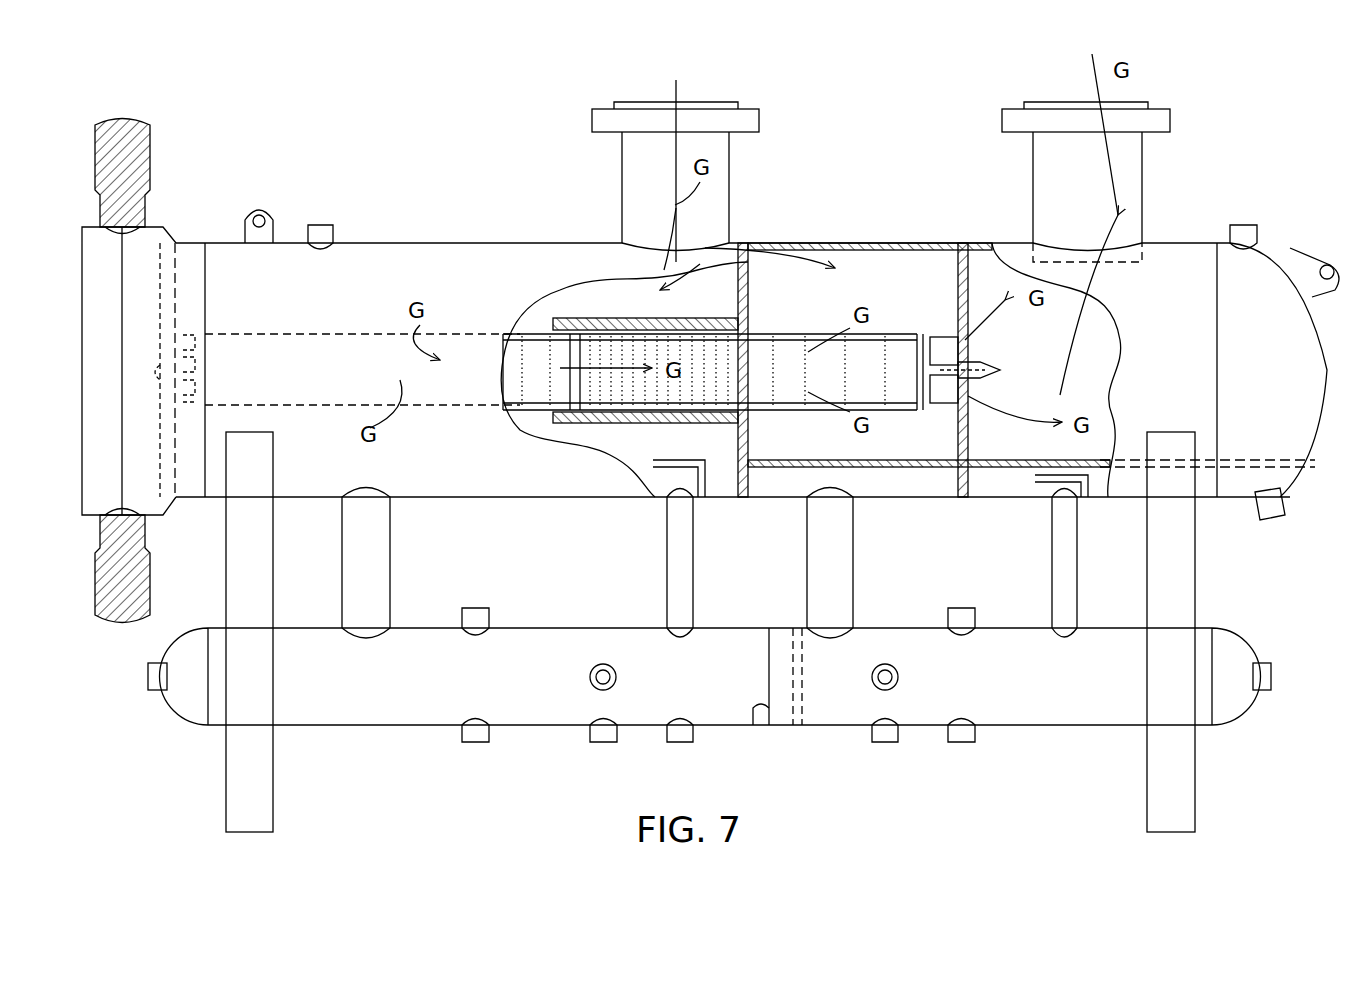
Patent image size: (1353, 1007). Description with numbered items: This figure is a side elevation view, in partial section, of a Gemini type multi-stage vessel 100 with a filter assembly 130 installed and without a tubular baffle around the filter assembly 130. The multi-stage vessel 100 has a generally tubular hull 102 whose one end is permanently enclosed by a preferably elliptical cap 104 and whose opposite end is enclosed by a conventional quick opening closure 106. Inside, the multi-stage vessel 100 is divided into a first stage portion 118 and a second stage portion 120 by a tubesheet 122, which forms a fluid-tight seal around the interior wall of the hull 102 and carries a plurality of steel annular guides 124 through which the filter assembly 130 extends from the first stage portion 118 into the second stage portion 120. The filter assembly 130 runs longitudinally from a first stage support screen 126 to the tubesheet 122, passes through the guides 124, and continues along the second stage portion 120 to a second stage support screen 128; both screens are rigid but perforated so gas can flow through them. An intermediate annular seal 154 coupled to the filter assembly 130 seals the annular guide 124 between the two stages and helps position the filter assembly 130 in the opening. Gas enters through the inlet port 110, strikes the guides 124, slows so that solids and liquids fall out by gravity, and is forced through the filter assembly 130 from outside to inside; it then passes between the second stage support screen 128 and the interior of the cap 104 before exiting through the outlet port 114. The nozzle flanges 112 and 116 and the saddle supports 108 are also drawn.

The multi-stage vessel 100 is at (400, 100).
The tubular hull 102 is at (470, 240).
The elliptical cap 104 is at (1310, 462).
The quick opening closure 106 is at (82, 242).
The saddle supports 108 is at (226, 774).
The inlet port 110 is at (730, 92).
The inlet nozzle flange 112 is at (760, 120).
The outlet port 114 is at (1042, 90).
The outlet nozzle flange 116 is at (1172, 120).
The first stage portion 118 is at (562, 284).
The second stage portion 120 is at (806, 268).
The tubesheet 122 is at (758, 260).
The annular guides 124 is at (655, 318).
The first stage support screen 126 is at (185, 268).
The second stage support screen 128 is at (952, 252).
The filter assembly 130 is at (815, 312).
The intermediate annular seal 154 is at (575, 382).